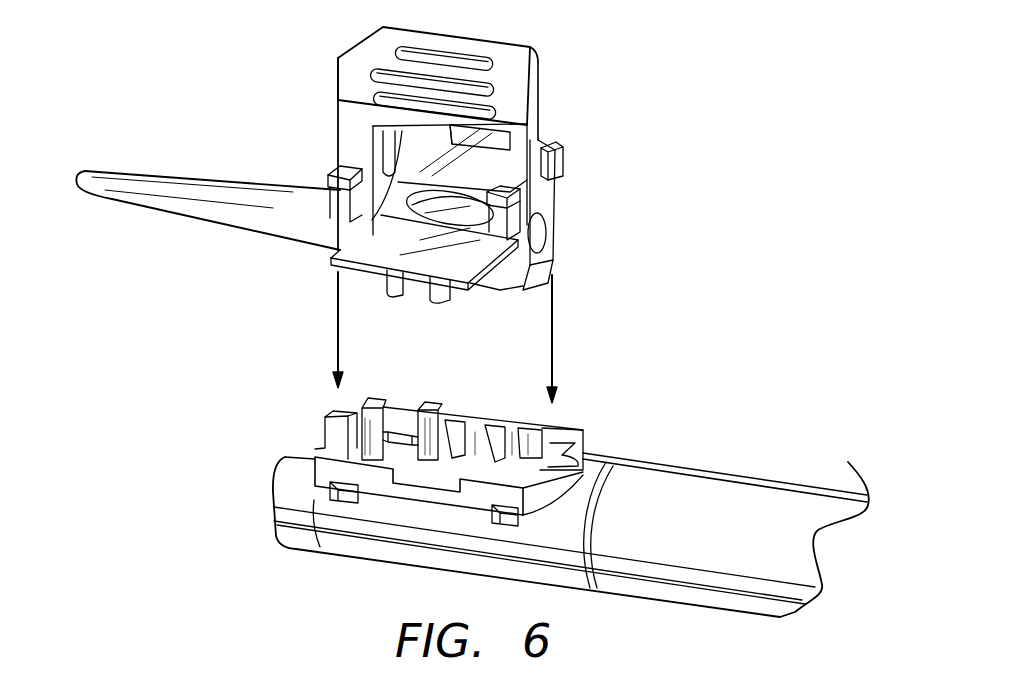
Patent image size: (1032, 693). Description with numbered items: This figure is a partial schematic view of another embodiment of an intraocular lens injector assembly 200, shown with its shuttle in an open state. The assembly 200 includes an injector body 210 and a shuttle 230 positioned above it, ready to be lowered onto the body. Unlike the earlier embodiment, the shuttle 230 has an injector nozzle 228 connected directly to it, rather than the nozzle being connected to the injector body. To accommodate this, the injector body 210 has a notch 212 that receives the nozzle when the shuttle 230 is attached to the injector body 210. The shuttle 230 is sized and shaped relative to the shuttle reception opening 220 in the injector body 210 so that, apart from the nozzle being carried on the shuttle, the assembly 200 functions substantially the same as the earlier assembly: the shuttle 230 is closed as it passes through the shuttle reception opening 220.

The intraocular lens injector assembly 200 is at (676, 223).
The injector body 210 is at (716, 470).
The notch 212 is at (344, 436).
The shuttle reception opening 220 is at (419, 462).
The injector nozzle 228 is at (113, 203).
The shuttle 230 is at (337, 118).